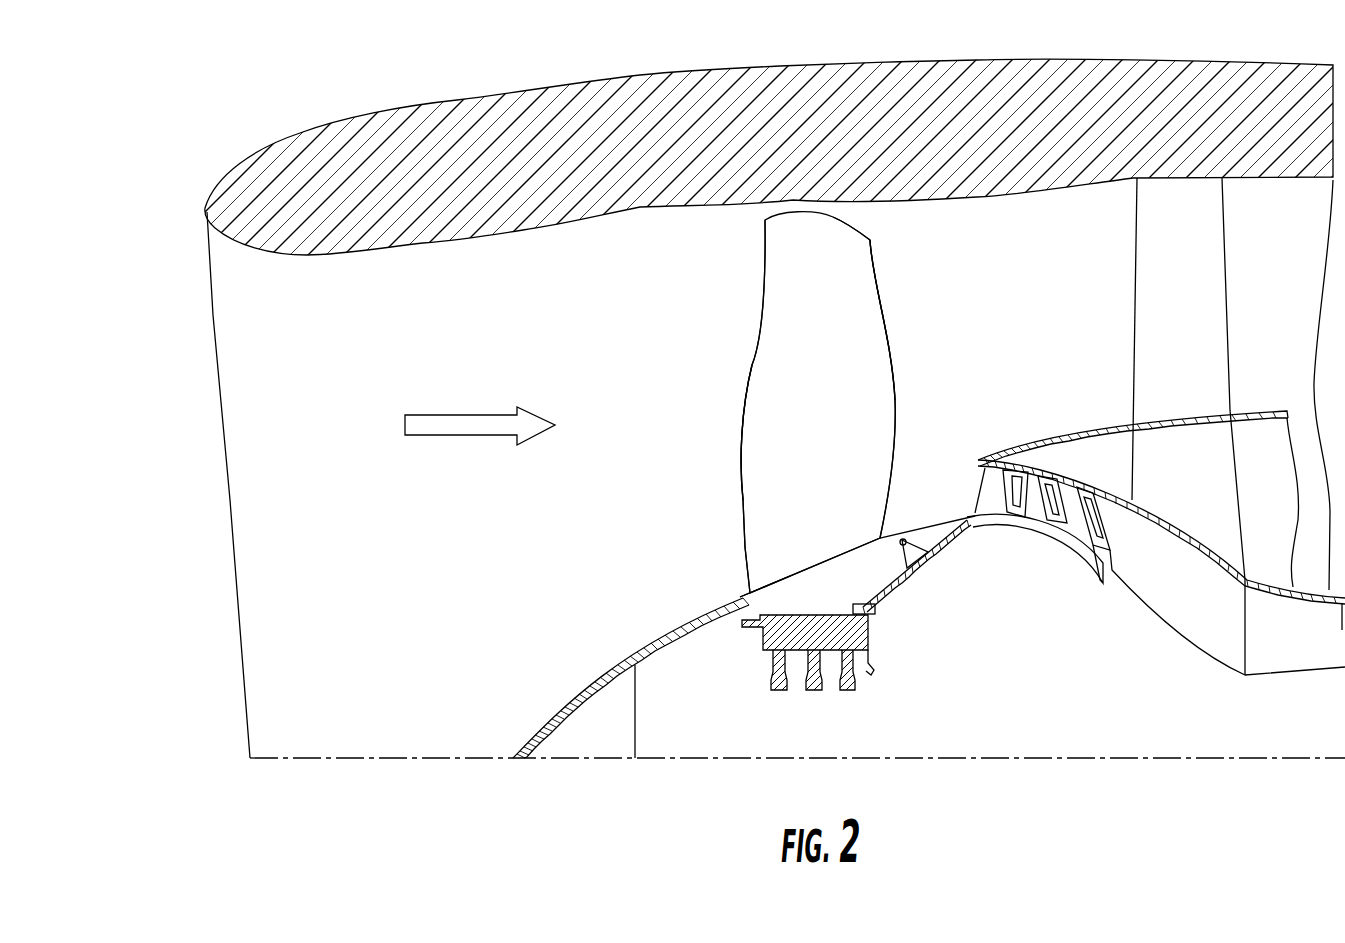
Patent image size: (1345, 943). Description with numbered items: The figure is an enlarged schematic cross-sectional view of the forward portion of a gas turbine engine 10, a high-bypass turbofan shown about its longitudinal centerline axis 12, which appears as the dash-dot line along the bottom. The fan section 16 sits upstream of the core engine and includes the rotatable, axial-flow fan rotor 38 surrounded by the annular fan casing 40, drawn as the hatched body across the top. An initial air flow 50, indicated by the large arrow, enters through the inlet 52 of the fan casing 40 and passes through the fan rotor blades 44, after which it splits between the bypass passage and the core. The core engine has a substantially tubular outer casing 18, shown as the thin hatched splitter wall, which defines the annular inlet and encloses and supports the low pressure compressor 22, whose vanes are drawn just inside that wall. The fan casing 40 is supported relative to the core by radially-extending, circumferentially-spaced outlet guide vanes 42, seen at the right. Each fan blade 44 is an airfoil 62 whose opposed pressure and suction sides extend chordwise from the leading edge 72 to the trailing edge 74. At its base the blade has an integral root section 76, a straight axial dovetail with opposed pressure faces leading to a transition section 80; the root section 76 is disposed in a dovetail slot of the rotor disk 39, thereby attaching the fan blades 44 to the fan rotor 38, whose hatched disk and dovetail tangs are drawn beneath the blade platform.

The gas turbine engine 10 is at (290, 115).
The centerline axis 12 is at (717, 757).
The fan section 16 is at (717, 330).
The outer casing 18 is at (1097, 430).
The low pressure compressor 22 is at (1027, 537).
The fan rotor 38 is at (830, 687).
The rotor disk 39 is at (770, 680).
The fan casing 40 is at (790, 77).
The outlet guide vanes 42 is at (1230, 290).
The fan rotor blades 44 is at (857, 320).
The initial air flow 50 is at (447, 437).
The inlet 52 is at (213, 315).
The airfoil 62 is at (770, 413).
The leading edge 72 is at (738, 470).
The trailing edge 74 is at (897, 427).
The root section 76 is at (770, 600).
The transition section 80 is at (783, 577).